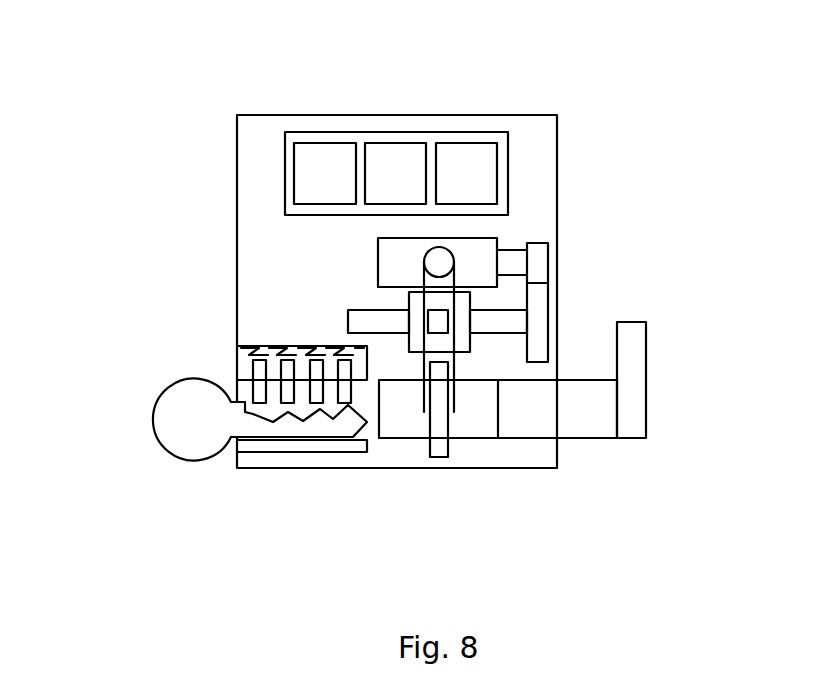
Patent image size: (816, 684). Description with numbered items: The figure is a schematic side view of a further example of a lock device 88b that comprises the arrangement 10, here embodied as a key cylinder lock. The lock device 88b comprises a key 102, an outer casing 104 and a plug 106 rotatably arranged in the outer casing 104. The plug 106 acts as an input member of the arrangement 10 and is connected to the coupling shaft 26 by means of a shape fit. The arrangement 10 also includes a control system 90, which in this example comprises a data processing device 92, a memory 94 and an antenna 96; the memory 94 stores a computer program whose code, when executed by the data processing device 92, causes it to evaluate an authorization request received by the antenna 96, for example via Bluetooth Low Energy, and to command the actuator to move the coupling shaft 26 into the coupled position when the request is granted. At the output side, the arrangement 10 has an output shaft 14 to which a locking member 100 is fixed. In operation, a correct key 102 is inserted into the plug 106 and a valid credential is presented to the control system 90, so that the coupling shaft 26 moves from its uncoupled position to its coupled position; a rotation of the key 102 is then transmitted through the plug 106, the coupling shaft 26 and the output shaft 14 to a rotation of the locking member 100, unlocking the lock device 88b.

The lock device 88b is at (103, 59).
The arrangement 10 is at (216, 124).
The control system 90 is at (451, 173).
The data processing device 92 is at (340, 187).
The memory 94 is at (410, 187).
The antenna 96 is at (483, 187).
The locking member 100 is at (628, 352).
The key 102 is at (193, 442).
The outer casing 104 is at (242, 360).
The plug 106 is at (372, 430).
The coupling shaft 26 is at (475, 409).
The output shaft 14 is at (580, 410).